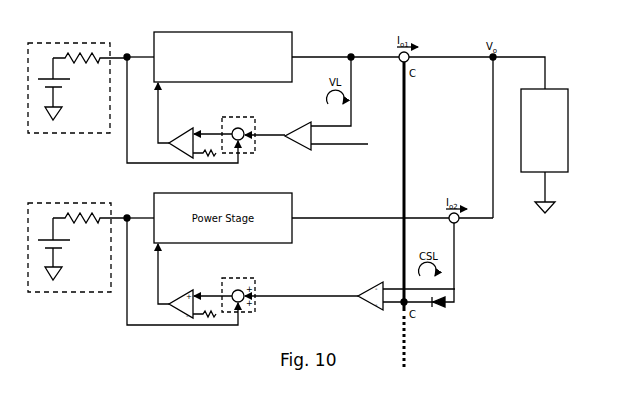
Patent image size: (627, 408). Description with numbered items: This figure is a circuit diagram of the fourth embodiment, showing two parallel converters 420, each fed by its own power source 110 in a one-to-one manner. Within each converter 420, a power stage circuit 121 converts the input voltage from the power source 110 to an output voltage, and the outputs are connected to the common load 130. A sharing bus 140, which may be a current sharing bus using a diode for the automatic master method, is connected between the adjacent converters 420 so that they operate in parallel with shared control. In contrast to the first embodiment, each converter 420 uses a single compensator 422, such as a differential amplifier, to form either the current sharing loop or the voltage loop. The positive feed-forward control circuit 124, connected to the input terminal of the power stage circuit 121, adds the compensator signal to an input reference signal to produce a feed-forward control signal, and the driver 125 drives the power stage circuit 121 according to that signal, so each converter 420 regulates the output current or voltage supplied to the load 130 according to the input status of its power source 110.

The power source 110 is at (63, 134).
The power stage circuit 121 is at (240, 32).
The driver 125 is at (188, 128).
The positive feed-forward control circuit 124 is at (243, 156).
The compensator 422 is at (307, 121).
The converter 420 is at (332, 41).
The sharing bus 140 is at (407, 115).
The load 130 is at (558, 89).